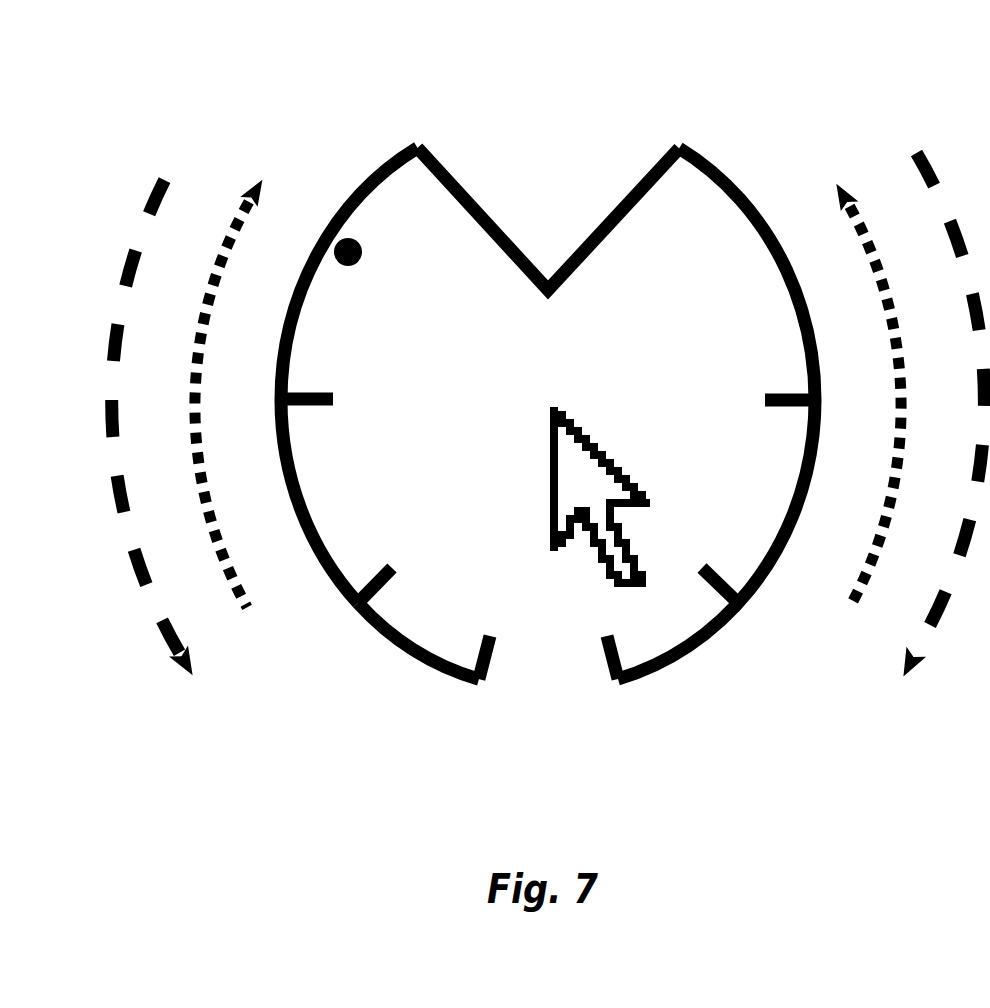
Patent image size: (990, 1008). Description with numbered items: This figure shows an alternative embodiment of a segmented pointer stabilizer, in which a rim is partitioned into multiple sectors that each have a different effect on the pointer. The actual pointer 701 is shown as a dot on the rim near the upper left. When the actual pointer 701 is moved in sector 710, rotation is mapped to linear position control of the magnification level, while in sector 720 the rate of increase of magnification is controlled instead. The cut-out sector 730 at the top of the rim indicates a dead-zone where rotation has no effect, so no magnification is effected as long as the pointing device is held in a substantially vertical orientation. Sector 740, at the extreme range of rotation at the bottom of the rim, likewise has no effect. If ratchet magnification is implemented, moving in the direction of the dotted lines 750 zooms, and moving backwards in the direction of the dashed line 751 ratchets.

The actual pointer 701 is at (348, 240).
The sector 710 is at (480, 230).
The sector 720 is at (390, 563).
The cut-out sector 730 is at (630, 192).
The sector 740 is at (622, 712).
The dotted lines 750 is at (233, 190).
The dashed line 751 is at (927, 153).